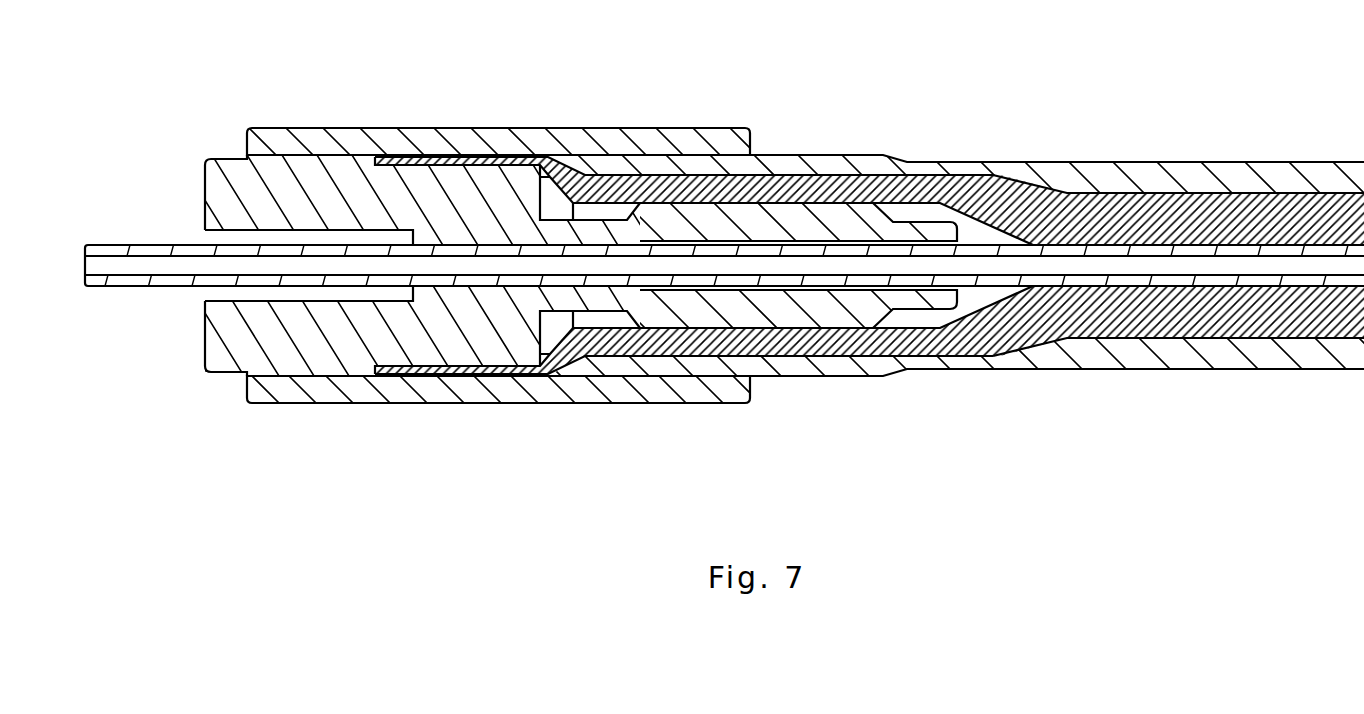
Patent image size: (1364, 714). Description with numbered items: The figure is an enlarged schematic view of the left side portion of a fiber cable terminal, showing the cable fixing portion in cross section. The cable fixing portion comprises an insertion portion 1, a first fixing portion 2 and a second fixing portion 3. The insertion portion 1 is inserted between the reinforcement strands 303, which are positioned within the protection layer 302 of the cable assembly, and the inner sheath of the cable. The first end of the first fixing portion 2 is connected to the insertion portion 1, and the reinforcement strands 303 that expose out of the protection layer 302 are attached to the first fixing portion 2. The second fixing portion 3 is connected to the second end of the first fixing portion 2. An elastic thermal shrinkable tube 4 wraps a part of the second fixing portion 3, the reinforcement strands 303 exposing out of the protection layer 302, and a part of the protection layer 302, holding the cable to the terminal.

The insertion portion 1 is at (830, 313).
The first fixing portion 2 is at (467, 354).
The second fixing portion 3 is at (213, 182).
The thermal shrinkable tube 4 is at (607, 135).
The protection layer 302 is at (1163, 178).
The reinforcement strands 303 is at (820, 183).